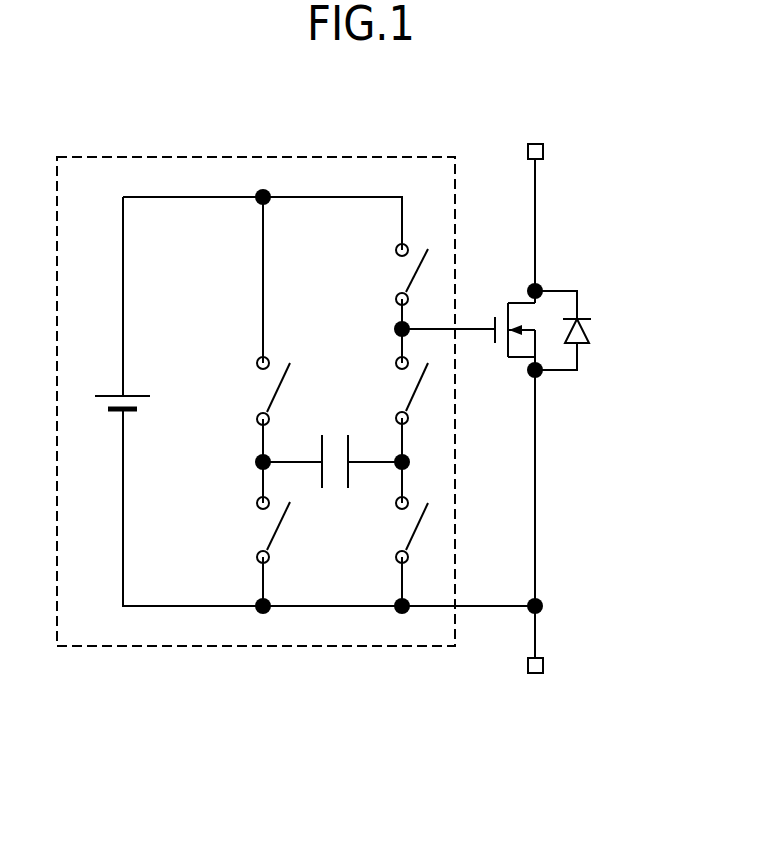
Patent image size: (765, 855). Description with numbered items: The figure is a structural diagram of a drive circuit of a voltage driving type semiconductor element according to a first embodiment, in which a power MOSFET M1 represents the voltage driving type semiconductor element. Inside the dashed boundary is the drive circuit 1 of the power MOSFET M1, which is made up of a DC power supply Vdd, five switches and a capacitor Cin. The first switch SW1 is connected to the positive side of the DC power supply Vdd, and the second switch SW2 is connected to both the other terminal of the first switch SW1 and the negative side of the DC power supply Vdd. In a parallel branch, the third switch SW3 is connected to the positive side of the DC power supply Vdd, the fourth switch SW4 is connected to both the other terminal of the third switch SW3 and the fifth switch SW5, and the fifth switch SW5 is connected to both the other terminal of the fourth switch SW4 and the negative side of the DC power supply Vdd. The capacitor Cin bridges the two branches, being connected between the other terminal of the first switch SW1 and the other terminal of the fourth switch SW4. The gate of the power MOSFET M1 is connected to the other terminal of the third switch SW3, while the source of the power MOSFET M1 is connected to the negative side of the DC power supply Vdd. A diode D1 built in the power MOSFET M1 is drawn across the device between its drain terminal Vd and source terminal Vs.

The drive circuit 1 is at (114, 157).
The DC power supply Vdd is at (109, 387).
The first switch SW1 is at (240, 391).
The second switch SW2 is at (240, 530).
The third switch SW3 is at (380, 274).
The fourth switch SW4 is at (380, 390).
The fifth switch SW5 is at (378, 530).
The capacitor Cin is at (332, 447).
The power MOSFET M1 is at (513, 323).
The diode D1 is at (590, 328).
The drain terminal Vd is at (534, 205).
The source terminal Vs is at (531, 520).